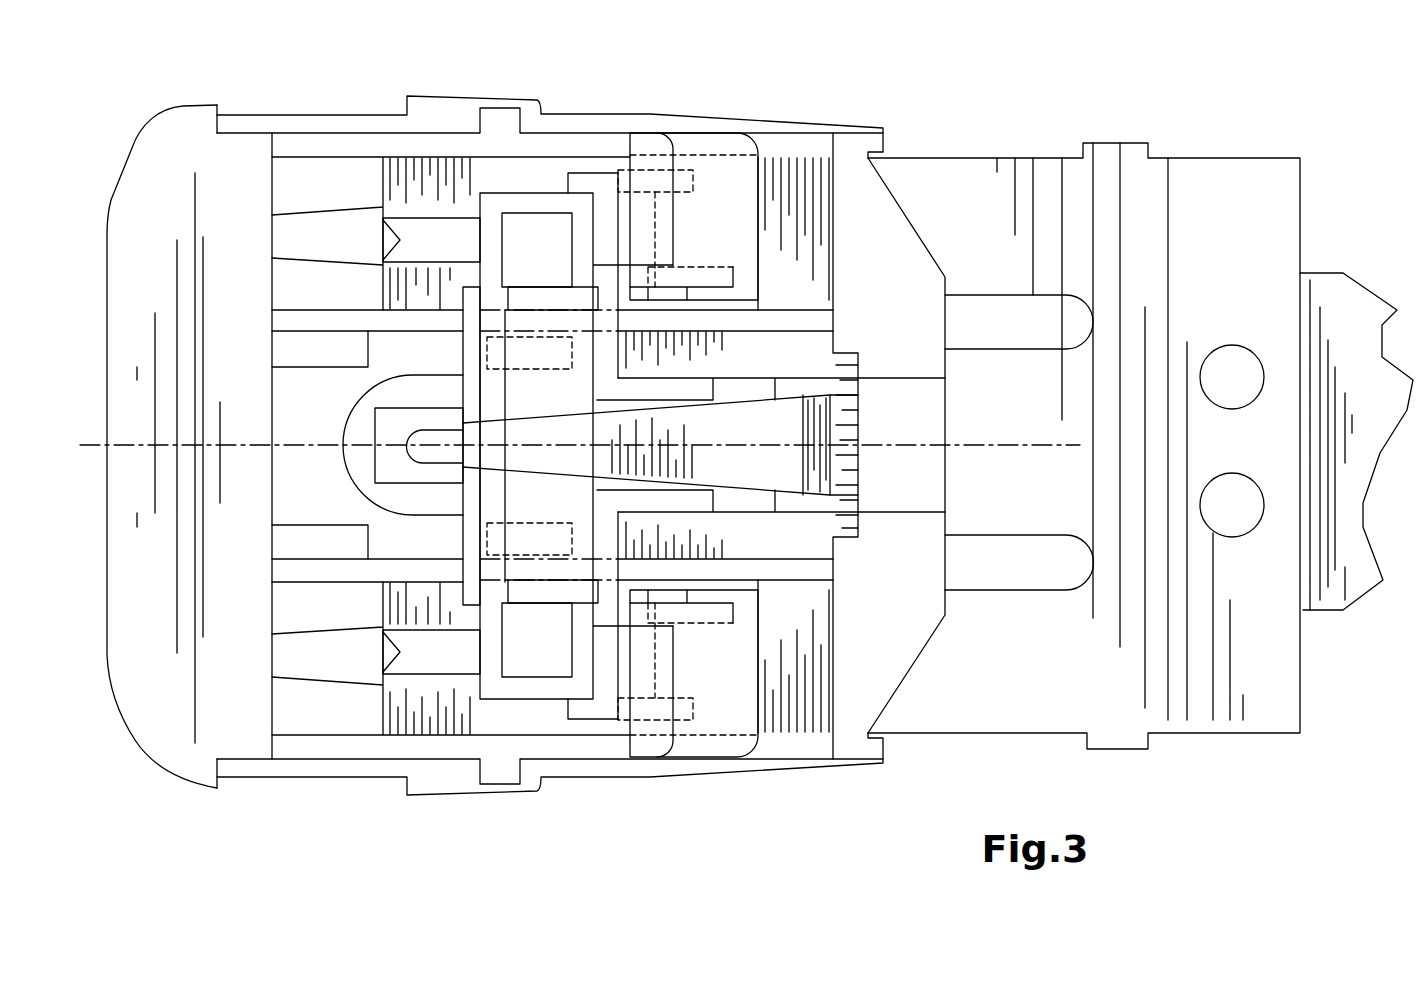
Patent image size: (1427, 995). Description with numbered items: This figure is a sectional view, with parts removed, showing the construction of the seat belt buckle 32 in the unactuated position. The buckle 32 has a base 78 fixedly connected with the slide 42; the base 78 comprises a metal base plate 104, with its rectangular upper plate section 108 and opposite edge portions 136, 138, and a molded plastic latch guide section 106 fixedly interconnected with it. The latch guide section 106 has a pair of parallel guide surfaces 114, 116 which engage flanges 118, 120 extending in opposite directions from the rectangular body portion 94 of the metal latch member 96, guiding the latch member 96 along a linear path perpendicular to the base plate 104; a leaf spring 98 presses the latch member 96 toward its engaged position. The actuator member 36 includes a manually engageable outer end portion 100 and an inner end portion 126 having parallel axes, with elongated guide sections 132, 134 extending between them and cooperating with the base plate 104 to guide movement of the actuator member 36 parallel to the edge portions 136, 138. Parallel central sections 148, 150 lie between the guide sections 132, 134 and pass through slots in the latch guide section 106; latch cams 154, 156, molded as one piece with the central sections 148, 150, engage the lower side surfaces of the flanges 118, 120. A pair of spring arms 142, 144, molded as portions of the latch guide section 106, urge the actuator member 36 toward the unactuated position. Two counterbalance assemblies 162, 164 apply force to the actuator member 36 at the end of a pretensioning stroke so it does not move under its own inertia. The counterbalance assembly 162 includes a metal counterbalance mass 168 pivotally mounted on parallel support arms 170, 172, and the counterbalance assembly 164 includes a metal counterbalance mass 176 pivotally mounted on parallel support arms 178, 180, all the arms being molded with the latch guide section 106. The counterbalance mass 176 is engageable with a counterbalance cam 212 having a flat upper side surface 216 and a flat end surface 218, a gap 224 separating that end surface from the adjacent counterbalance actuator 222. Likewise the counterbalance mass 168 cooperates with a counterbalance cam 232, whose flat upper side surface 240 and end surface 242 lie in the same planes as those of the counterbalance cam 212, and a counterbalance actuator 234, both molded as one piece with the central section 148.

The buckle 32 is at (934, 92).
The actuator member 36 is at (593, 441).
The slide 42 is at (1382, 582).
The base 78 is at (990, 152).
The rectangular body portion 94 is at (500, 418).
The latch member 96 is at (403, 378).
The leaf spring 98 is at (893, 377).
The outer end portion 100 is at (147, 235).
The base plate 104 is at (1084, 426).
The latch guide section 106 is at (537, 185).
The upper plate section 108 is at (1057, 183).
The guide surface 114 is at (505, 376).
The guide surface 116 is at (617, 382).
The flange 118 is at (542, 347).
The flange 120 is at (515, 500).
The inner end portion 126 is at (870, 205).
The guide section 132 is at (445, 145).
The guide section 134 is at (443, 752).
The edge portion 136 is at (1023, 160).
The edge portion 138 is at (972, 730).
The spring arm 142 is at (323, 230).
The spring arm 144 is at (312, 663).
The central section 148 is at (283, 323).
The central section 150 is at (303, 572).
The latch cam 154 is at (392, 355).
The latch cam 156 is at (392, 542).
The counterbalance assembly 162 is at (745, 127).
The counterbalance assembly 164 is at (738, 765).
The counterbalance mass 168 is at (687, 147).
The support arm 170 is at (603, 178).
The support arm 172 is at (622, 267).
The counterbalance mass 176 is at (713, 730).
The support arm 178 is at (627, 623).
The support arm 180 is at (602, 710).
The counterbalance cam 212 is at (550, 608).
The upper side surface 216 is at (538, 592).
The end surface 218 is at (652, 582).
The counterbalance actuator 222 is at (710, 580).
The gap 224 is at (665, 583).
The counterbalance cam 232 is at (518, 291).
The counterbalance actuator 234 is at (723, 307).
The upper side surface 240 is at (563, 297).
The end surface 242 is at (650, 307).